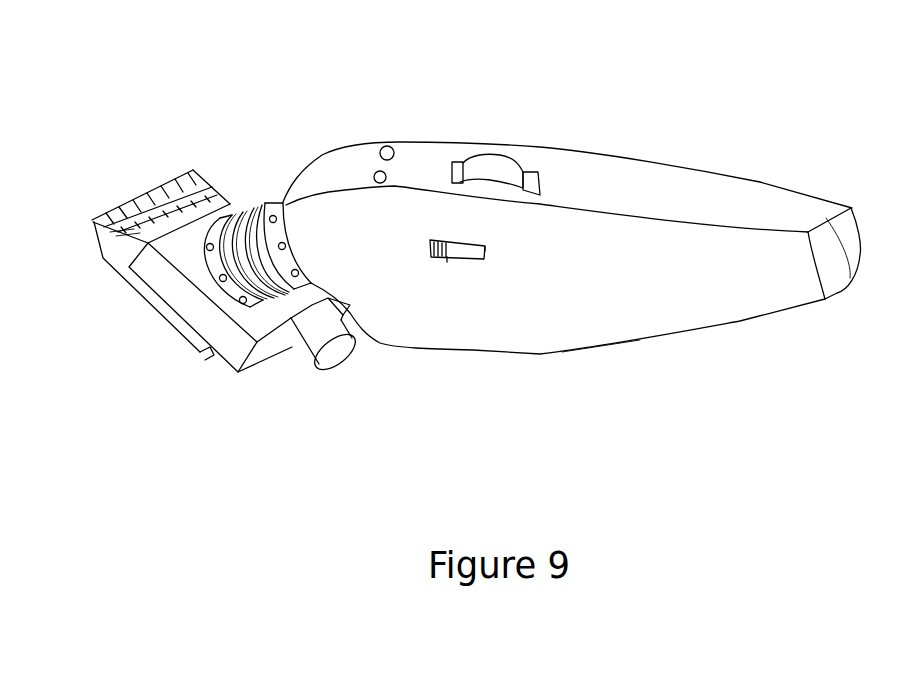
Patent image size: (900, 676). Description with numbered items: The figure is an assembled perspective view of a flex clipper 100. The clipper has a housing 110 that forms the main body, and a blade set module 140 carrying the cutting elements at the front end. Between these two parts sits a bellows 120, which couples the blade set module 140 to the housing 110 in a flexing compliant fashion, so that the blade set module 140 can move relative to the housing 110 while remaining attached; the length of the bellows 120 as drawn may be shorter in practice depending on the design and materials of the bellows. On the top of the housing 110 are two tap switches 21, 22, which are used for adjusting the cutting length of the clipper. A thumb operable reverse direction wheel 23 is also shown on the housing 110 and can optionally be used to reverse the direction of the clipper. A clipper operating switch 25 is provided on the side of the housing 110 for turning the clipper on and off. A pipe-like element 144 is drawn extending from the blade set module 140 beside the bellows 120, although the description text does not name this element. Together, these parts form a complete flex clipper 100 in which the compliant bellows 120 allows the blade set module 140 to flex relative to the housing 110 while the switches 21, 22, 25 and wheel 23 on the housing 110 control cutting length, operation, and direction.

The flex clipper 100 is at (583, 67).
The housing 110 is at (582, 172).
The bellows 120 is at (249, 212).
The blade set module 140 is at (217, 372).
The suction pipe 144 is at (318, 356).
The tap switch 21 is at (373, 173).
The tap switch 22 is at (394, 141).
The thumb operable reverse direction wheel 23 is at (497, 163).
The clipper operating switch 25 is at (497, 250).